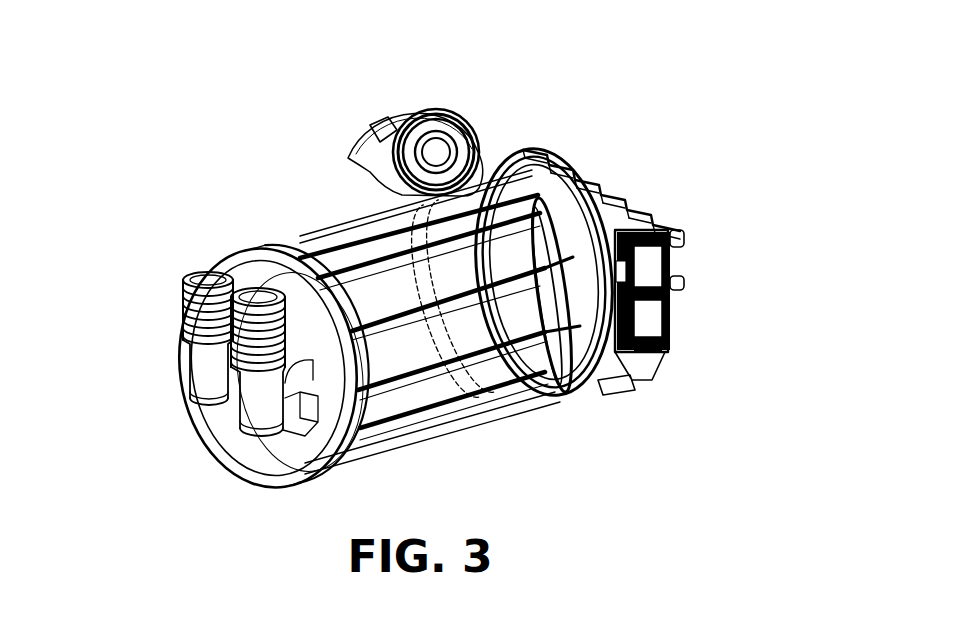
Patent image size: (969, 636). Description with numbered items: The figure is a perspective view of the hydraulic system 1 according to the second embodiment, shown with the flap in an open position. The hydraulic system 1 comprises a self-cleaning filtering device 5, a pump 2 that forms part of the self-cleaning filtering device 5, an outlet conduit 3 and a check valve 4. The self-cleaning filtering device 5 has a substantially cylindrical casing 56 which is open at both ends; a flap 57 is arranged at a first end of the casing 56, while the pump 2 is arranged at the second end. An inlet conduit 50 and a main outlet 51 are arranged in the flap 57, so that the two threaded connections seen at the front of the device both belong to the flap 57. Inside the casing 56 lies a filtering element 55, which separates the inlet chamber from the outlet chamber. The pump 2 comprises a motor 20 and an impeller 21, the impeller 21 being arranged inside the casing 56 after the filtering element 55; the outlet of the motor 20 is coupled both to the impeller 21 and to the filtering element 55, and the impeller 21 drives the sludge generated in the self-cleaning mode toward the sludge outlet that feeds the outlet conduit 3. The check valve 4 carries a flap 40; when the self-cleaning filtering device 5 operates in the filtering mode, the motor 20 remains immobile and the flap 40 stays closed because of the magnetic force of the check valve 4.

The hydraulic system 1 is at (126, 158).
The pump 2 is at (689, 277).
The outlet conduit 3 is at (434, 72).
The check valve 4 is at (371, 158).
The self-cleaning filtering device 5 is at (449, 436).
The motor 20 is at (643, 317).
The impeller 21 is at (575, 395).
The flap 40 is at (382, 110).
The inlet conduit 50 is at (276, 400).
The main outlet 51 is at (205, 357).
The filtering element 55 is at (403, 365).
The casing 56 is at (307, 237).
The flap 57 is at (240, 247).